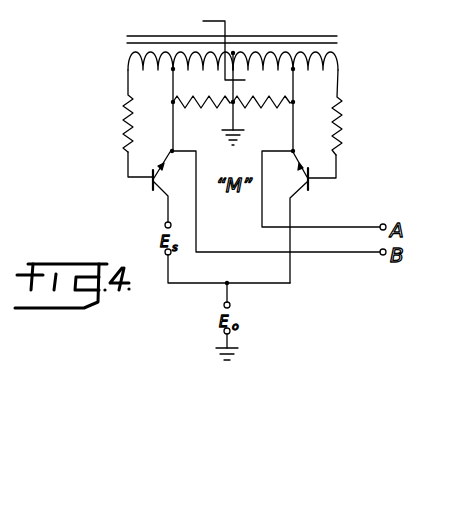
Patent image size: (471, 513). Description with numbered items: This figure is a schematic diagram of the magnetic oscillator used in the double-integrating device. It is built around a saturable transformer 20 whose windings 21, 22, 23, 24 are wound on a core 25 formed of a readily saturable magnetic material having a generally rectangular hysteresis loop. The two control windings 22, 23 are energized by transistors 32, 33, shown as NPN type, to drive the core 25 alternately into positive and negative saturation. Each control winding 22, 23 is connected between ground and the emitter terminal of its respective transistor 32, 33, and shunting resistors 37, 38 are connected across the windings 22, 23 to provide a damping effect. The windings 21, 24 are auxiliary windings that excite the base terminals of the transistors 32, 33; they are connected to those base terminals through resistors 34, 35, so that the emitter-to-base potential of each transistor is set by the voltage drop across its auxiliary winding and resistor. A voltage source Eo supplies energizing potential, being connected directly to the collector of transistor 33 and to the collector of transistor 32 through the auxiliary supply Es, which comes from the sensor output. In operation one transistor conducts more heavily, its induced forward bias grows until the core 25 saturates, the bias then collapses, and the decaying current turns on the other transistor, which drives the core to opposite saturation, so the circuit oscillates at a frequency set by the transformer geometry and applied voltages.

The saturable transformer 20 is at (123, 23).
The auxiliary winding 21 is at (140, 78).
The control winding 22 is at (206, 80).
The control winding 23 is at (259, 79).
The auxiliary winding 24 is at (306, 79).
The core 25 is at (270, 35).
The transistor 32 is at (152, 185).
The transistor 33 is at (313, 187).
The resistor 34 is at (122, 128).
The resistor 35 is at (343, 124).
The shunting resistor 37 is at (186, 118).
The shunting resistor 38 is at (256, 118).